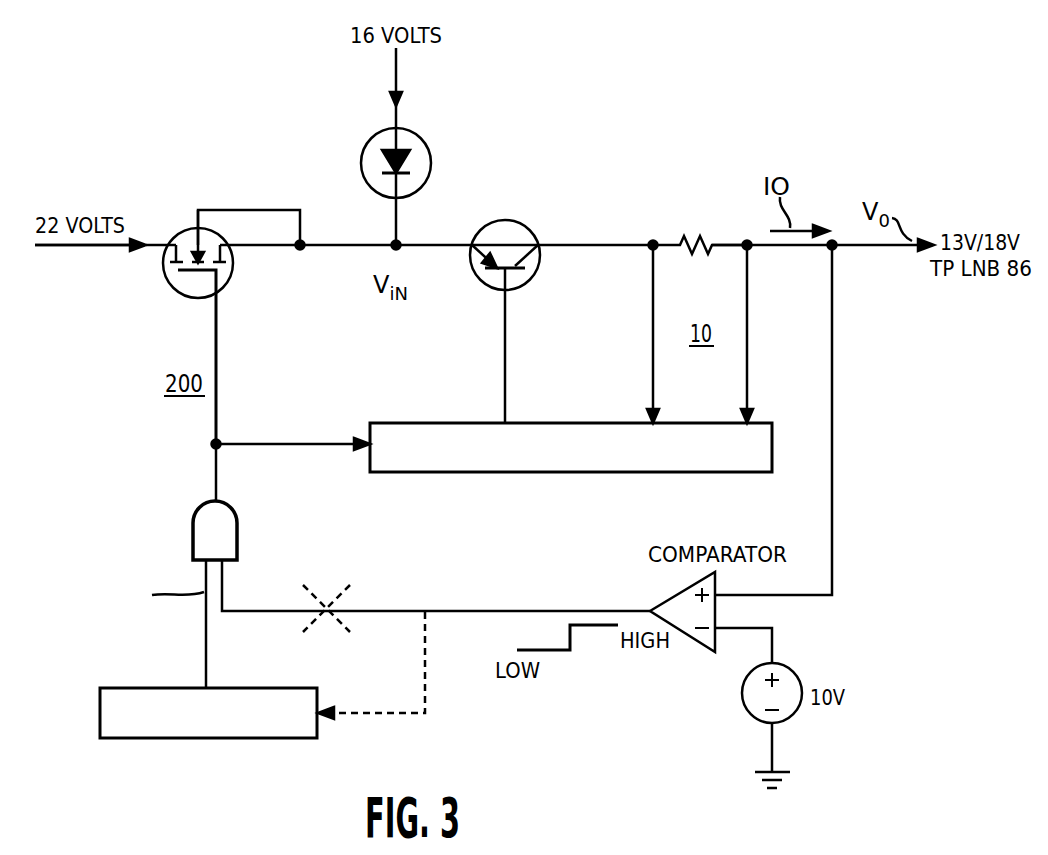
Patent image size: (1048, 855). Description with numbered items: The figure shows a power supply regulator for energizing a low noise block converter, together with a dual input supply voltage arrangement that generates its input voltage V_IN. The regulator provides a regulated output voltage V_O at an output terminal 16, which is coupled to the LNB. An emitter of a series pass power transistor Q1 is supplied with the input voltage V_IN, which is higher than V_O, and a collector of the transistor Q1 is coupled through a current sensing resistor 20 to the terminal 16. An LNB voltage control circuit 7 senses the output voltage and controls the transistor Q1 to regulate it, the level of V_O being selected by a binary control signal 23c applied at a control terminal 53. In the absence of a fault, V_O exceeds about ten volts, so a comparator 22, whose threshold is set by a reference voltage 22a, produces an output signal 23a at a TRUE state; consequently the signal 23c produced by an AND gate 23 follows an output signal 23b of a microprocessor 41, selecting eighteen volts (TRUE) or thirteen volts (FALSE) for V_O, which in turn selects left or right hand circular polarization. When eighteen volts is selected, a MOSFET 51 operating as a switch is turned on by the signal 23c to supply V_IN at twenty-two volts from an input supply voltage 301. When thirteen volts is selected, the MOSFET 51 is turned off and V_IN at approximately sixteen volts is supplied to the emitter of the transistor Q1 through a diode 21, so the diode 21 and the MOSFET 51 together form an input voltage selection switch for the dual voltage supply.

The input supply voltage 301 is at (90, 248).
The metal oxide semiconductor field effect transistor (MOSFET) 51 is at (166, 282).
The diode 21 is at (406, 163).
The series pass power transistor Q1 is at (521, 224).
The current sensing resistor 20 is at (700, 243).
The output terminal 16 is at (837, 249).
The control terminal 53 is at (218, 447).
The binary control signal 23c is at (287, 442).
The LNB voltage control circuit 7 is at (512, 473).
The AND gate 23 is at (195, 534).
The output signal of microprocessor 23b is at (204, 643).
The comparator output signal 23a is at (455, 611).
The microprocessor 41 is at (100, 713).
The comparator 22 is at (689, 622).
The reference voltage 22a is at (776, 640).